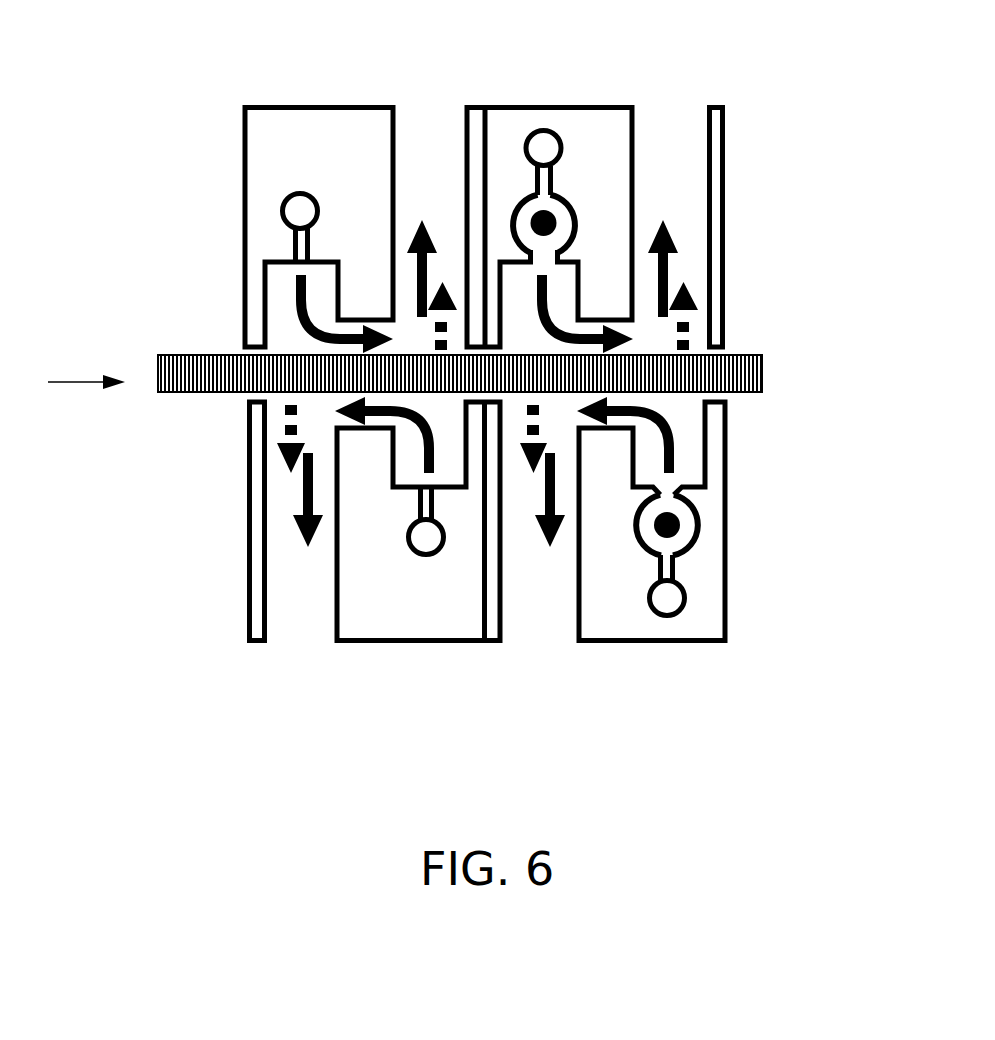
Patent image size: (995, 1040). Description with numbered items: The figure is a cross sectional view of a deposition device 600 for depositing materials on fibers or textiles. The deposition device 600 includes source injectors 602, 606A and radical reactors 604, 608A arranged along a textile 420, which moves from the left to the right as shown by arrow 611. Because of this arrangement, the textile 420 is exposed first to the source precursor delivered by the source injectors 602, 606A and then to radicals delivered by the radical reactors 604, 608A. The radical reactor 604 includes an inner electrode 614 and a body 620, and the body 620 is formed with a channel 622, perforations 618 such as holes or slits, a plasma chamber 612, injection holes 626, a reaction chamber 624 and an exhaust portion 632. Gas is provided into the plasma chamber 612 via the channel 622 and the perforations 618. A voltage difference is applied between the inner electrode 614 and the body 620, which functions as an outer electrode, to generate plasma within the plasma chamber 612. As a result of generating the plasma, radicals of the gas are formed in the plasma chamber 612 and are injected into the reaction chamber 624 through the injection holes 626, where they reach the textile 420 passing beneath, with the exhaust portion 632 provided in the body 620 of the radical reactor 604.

The deposition device 600 is at (767, 54).
The textile 420 is at (460, 373).
The arrow 611 is at (77, 382).
The source injector 602 is at (455, 91).
The radical reactor 604 is at (649, 188).
The source injector 606A is at (482, 652).
The radical reactor 608A is at (725, 652).
The plasma chamber 612 is at (560, 217).
The inner electrode 614 is at (538, 210).
The perforations 618 is at (541, 172).
The body 620 is at (598, 126).
The channel 622 is at (543, 215).
The reaction chamber 624 is at (560, 292).
The injection holes 626 is at (540, 257).
The exhaust portion 632 is at (673, 257).